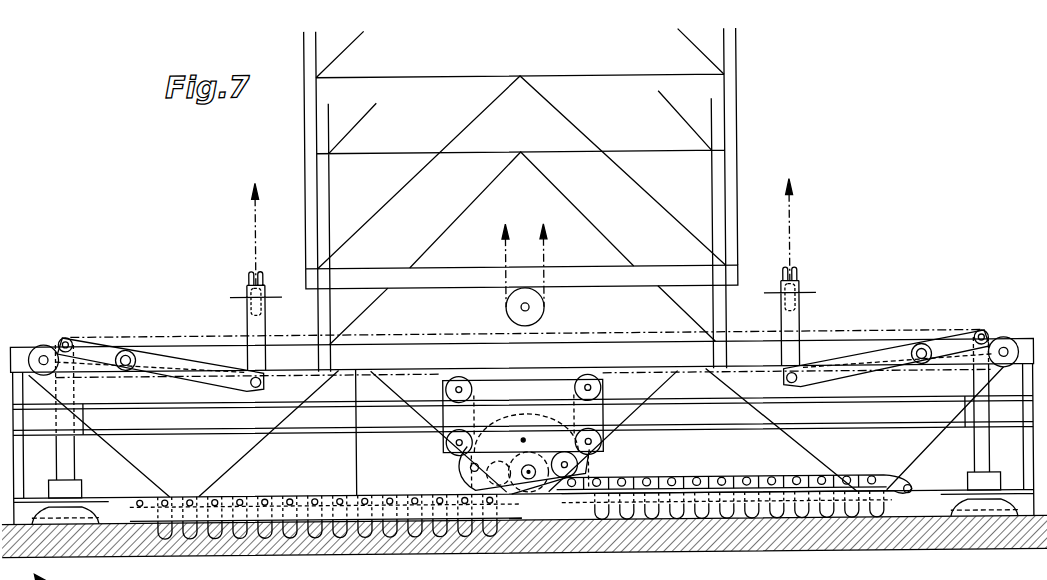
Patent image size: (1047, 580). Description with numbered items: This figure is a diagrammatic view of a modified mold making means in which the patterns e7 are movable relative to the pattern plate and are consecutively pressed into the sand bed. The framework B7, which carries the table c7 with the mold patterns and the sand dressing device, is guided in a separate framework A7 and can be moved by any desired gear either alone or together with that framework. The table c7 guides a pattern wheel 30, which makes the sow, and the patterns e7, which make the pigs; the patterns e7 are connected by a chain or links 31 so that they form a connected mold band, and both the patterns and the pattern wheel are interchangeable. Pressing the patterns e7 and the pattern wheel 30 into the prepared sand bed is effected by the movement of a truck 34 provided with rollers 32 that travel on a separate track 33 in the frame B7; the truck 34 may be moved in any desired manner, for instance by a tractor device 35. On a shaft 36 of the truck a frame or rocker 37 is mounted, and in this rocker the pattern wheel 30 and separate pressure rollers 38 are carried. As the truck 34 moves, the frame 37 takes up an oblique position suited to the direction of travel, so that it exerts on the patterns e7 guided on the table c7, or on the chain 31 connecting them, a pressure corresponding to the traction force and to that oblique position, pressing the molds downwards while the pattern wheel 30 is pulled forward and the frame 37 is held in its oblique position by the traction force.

The pattern wheel 30 is at (510, 455).
The chain or links 31 is at (697, 482).
The rollers 32 is at (586, 396).
The track 33 is at (523, 416).
The truck 34 is at (530, 388).
The tractor device 35 is at (625, 372).
The shaft 36 is at (522, 440).
The frame or rocker 37 is at (508, 470).
The pressure rollers 38 is at (580, 469).
The separate framework A7 is at (731, 58).
The framework B7 is at (522, 412).
The table c7 is at (913, 511).
The patterns e7 is at (497, 527).